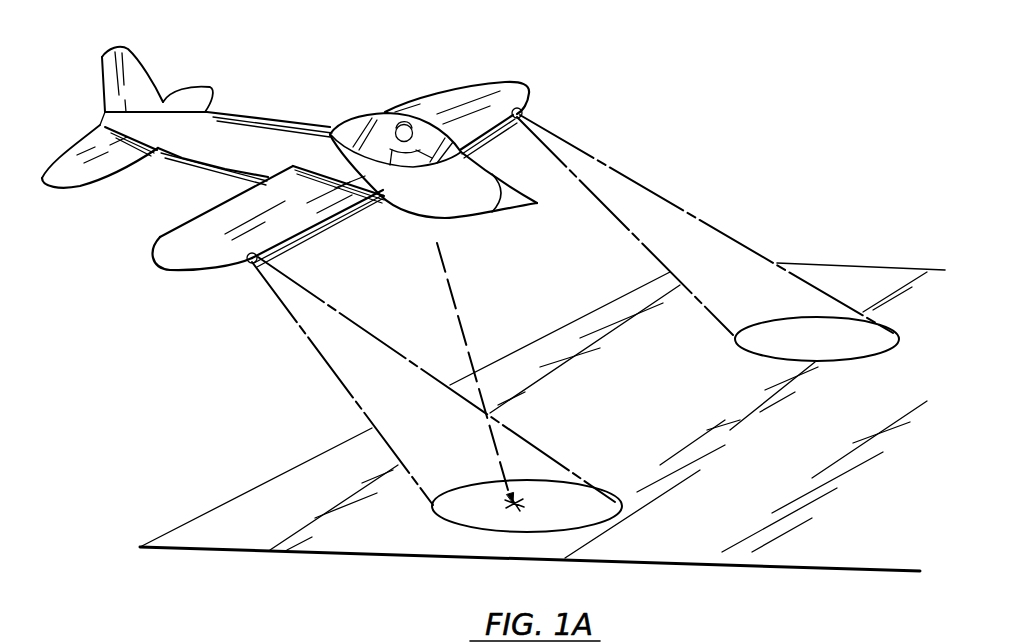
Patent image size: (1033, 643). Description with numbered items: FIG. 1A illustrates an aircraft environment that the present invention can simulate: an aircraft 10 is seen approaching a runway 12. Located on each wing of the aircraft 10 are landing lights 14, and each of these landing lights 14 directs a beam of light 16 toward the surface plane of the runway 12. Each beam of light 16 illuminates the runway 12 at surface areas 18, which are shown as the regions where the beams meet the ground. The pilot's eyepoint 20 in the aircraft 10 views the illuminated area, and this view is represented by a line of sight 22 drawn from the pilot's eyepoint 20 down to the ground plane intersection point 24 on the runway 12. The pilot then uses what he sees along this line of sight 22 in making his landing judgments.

The aircraft 10 is at (273, 143).
The runway 12 is at (262, 500).
The landing lights 14 is at (253, 263).
The beam of light 16 is at (343, 337).
The surface areas 18 is at (562, 505).
The pilot's eyepoint 20 is at (437, 232).
The line of sight 22 is at (463, 323).
The ground plane intersection point 24 is at (514, 505).